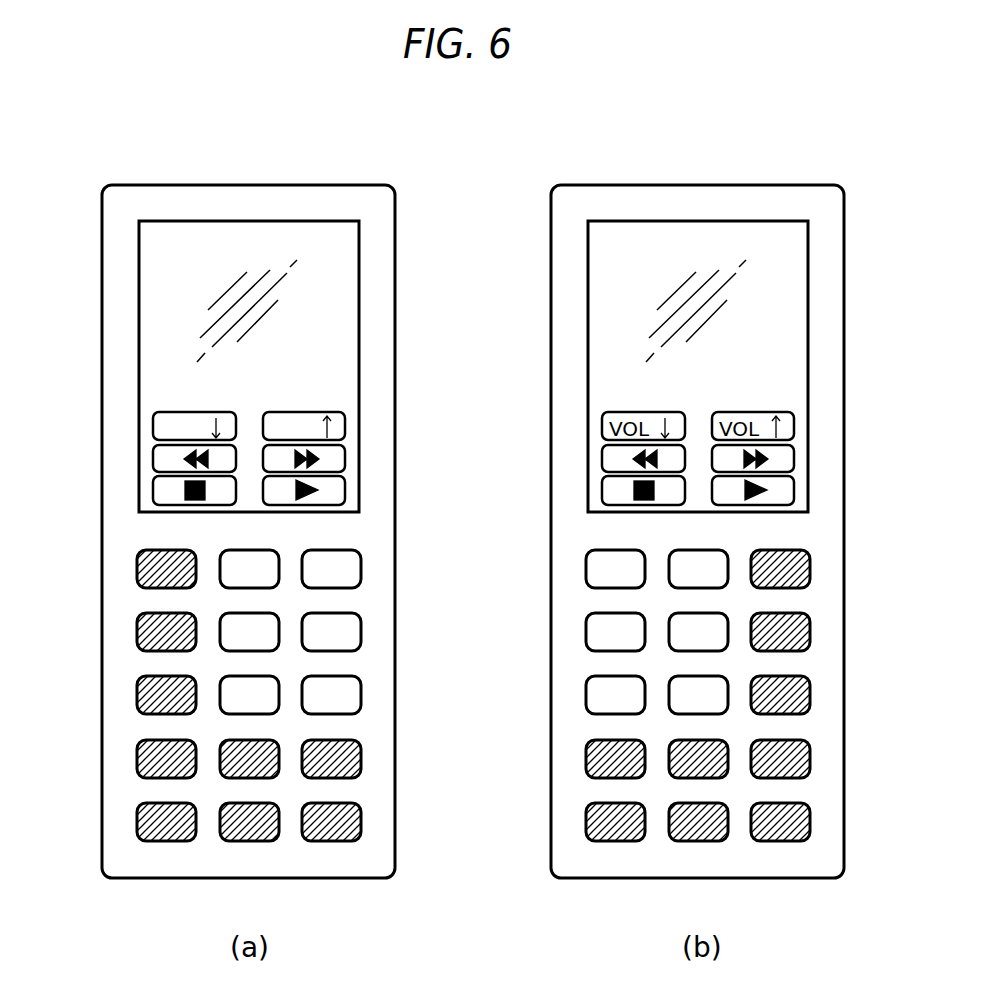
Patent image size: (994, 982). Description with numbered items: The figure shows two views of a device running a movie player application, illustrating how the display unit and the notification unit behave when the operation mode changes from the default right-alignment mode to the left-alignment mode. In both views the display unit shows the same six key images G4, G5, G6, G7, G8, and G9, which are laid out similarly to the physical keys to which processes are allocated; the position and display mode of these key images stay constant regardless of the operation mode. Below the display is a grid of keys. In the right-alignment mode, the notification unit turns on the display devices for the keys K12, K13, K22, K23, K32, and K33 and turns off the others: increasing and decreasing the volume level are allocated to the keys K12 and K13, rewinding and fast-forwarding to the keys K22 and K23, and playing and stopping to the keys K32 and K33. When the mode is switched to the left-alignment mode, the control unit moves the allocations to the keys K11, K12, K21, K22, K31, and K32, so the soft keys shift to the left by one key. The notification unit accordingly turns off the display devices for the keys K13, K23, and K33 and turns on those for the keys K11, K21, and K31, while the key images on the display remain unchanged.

The key image G4 is at (160, 420).
The key image G5 is at (338, 420).
The key image G6 is at (160, 453).
The key image G7 is at (338, 453).
The key image G8 is at (160, 492).
The key image G9 is at (338, 492).
The key K11 is at (600, 572).
The key K12 is at (265, 558).
The key K13 is at (345, 574).
The key K21 is at (600, 634).
The key K22 is at (265, 621).
The key K23 is at (345, 637).
The key K31 is at (600, 697).
The key K32 is at (265, 684).
The key K33 is at (345, 700).